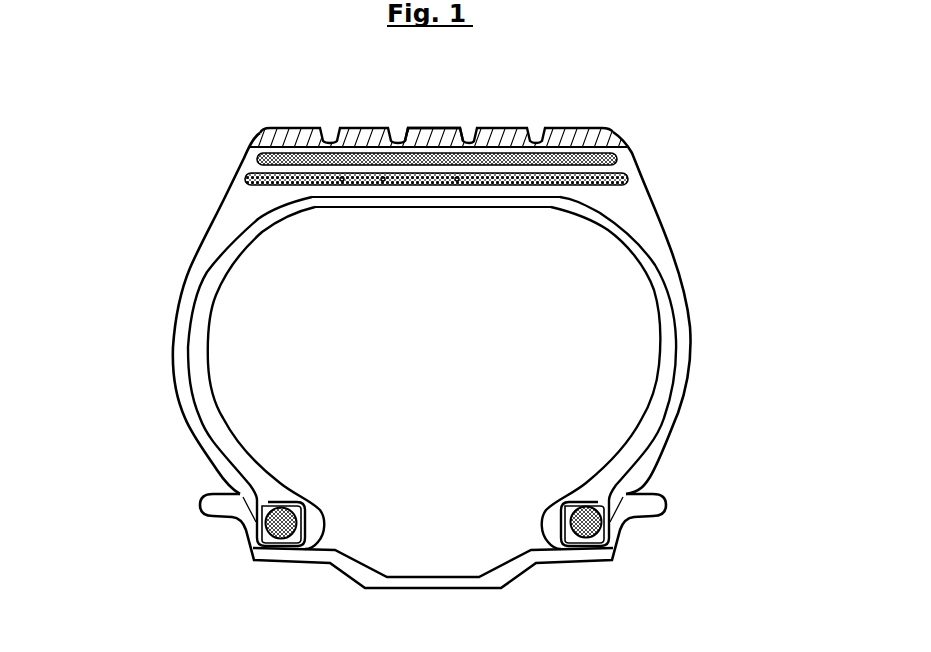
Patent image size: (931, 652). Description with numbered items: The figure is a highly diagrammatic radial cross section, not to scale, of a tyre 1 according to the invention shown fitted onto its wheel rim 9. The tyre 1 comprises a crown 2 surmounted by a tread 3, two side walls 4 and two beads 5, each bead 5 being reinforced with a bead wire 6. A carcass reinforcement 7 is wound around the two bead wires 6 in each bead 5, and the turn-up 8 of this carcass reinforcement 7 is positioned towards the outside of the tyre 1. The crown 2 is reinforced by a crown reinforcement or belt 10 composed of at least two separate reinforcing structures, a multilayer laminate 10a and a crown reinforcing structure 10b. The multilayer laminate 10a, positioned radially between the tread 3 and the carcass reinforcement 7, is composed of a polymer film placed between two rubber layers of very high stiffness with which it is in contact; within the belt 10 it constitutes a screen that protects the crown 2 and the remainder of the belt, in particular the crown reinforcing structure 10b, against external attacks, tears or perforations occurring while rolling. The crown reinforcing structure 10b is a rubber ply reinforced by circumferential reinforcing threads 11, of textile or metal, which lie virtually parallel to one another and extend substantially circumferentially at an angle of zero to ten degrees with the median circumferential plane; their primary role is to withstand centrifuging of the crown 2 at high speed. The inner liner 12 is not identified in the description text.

The tyre 1 is at (737, 271).
The crown 2 is at (645, 147).
The tread 3 is at (422, 137).
The side wall 4 is at (178, 340).
The bead 5 is at (303, 540).
The bead wire 6 is at (300, 520).
The carcass reinforcement 7 is at (195, 283).
The turn-up 8 is at (257, 500).
The wheel rim 9 is at (247, 533).
The belt 10 is at (630, 177).
The multilayer laminate 10a is at (257, 160).
The crown reinforcing structure 10b is at (247, 182).
The circumferential reinforcing threads 11 is at (457, 179).
The inner liner 12 is at (224, 390).